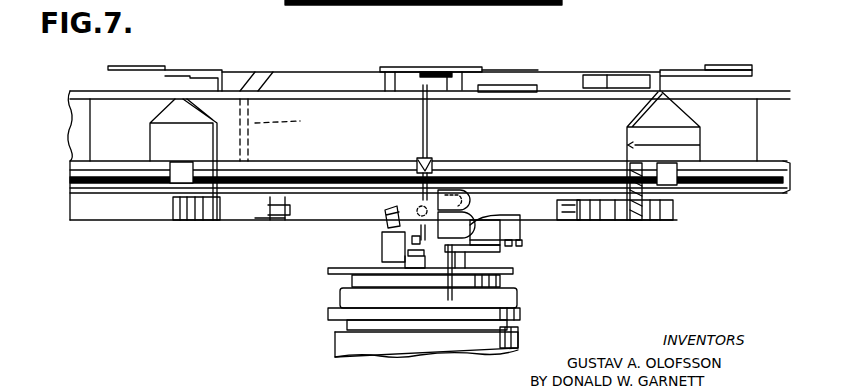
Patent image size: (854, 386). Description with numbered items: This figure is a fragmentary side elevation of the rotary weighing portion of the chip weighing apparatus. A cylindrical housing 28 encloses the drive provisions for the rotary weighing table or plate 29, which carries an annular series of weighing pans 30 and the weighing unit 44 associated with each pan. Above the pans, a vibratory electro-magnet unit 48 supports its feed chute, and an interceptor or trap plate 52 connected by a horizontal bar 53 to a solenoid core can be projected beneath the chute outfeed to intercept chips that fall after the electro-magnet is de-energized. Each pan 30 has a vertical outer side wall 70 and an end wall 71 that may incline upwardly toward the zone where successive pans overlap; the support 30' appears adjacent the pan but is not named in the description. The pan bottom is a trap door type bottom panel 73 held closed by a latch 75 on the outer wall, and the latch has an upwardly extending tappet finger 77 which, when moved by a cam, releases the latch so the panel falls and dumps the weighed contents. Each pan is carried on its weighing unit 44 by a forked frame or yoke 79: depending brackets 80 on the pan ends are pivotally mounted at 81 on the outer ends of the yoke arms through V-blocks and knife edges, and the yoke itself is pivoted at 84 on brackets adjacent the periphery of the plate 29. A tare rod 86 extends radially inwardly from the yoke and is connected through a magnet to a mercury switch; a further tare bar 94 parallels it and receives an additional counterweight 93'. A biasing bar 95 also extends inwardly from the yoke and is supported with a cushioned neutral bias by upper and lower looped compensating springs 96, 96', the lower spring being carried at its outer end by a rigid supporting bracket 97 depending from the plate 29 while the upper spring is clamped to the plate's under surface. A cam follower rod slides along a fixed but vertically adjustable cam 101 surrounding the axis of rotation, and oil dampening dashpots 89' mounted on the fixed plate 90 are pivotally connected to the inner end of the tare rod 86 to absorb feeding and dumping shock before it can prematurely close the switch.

The cylindrical housing 28 is at (518, 338).
The rotary weighing table or plate 29 is at (140, 188).
The weighing pan 30 is at (408, 130).
The guide rail support 30' is at (681, 156).
The weighing unit 44 is at (363, 242).
The vibratory electro-magnet unit 48 is at (292, 82).
The interceptor or trap plate 52 is at (132, 66).
The horizontal bar 53 is at (178, 70).
The outer side wall 70 is at (325, 113).
The end wall 71 is at (173, 91).
The bottom panel 73 is at (433, 0).
The latch 75 is at (437, 156).
The tappet finger 77 is at (428, 135).
The forked frame or yoke 79 is at (520, 213).
The depending lug or bracket 80 is at (182, 184).
The pivotal mount 81 is at (637, 222).
The frame pivot 84 is at (277, 219).
The tare rod 86 is at (412, 197).
The oil dampening dashpot 89' is at (405, 342).
The fixed plate 90 is at (333, 272).
The additional counterweight 93' is at (386, 251).
The further tare bar 94 is at (385, 220).
The biasing bar 95 is at (452, 192).
The upper looped compensating spring 96 is at (489, 187).
The lower looped compensating spring 96' is at (513, 236).
The rigid supporting bracket 97 is at (502, 242).
The cam 101 is at (332, 302).